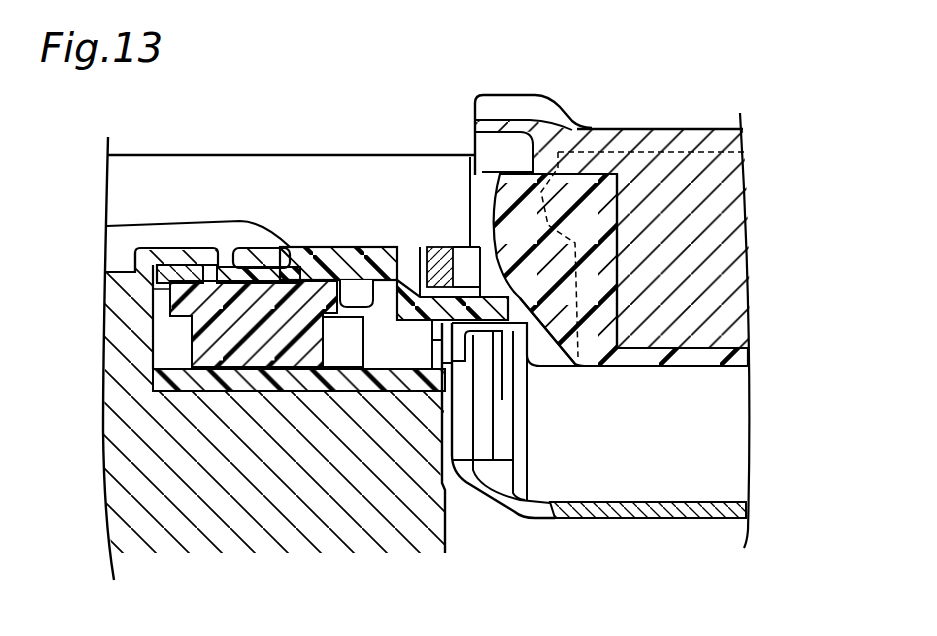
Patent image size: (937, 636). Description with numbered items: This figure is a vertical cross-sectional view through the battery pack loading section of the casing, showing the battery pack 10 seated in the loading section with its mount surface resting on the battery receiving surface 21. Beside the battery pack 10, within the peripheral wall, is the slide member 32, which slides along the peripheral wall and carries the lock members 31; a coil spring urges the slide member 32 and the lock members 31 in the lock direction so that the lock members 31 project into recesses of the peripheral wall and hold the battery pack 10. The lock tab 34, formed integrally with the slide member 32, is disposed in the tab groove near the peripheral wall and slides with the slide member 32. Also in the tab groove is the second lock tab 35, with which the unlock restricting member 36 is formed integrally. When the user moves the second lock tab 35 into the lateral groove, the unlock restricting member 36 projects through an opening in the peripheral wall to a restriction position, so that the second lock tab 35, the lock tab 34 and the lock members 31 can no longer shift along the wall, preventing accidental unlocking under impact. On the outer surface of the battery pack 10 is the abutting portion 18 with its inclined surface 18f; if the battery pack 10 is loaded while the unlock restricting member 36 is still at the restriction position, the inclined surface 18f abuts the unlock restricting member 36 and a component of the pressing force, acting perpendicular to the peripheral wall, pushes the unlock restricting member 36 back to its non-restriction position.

The battery pack 10 is at (663, 127).
The abutting portion 18 is at (498, 242).
The inclined surface 18f is at (540, 292).
The battery receiving surface 21 is at (667, 500).
The lock member 31 is at (465, 361).
The slide member 32 is at (175, 302).
The lock tab 34 is at (257, 250).
The second lock tab 35 is at (350, 245).
The unlock restricting member 36 is at (528, 327).